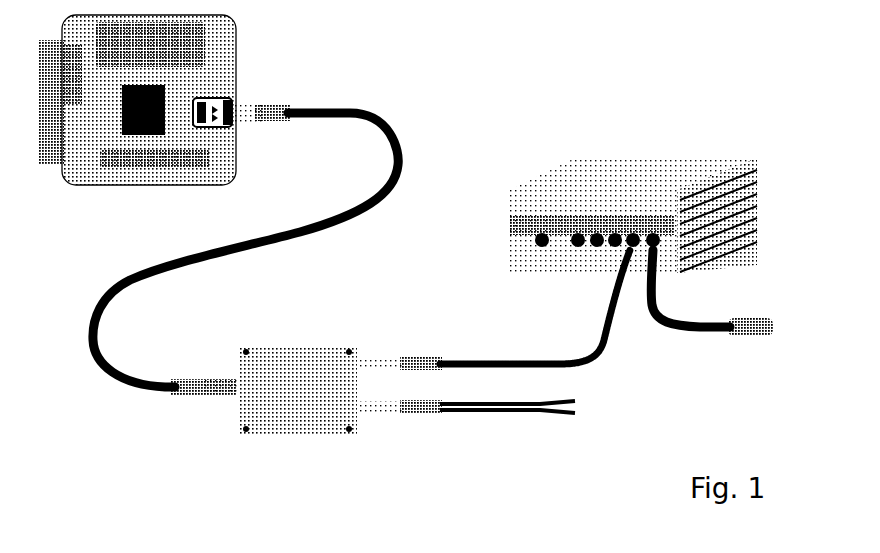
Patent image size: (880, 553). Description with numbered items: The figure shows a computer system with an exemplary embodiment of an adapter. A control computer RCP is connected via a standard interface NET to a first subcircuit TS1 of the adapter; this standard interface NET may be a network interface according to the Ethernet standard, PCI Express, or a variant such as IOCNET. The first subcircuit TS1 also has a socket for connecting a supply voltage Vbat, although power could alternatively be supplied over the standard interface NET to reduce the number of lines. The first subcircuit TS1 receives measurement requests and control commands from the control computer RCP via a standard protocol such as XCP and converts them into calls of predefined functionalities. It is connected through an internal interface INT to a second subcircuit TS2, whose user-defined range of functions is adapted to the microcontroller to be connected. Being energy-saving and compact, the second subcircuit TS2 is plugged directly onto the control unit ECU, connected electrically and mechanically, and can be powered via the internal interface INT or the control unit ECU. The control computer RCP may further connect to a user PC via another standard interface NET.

The control unit ECU is at (137, 100).
The second subcircuit TS2 is at (240, 92).
The internal interface INT is at (245, 249).
The first subcircuit TS1 is at (297, 391).
The standard interface NET is at (565, 310).
The supply voltage Vbat is at (466, 425).
The control computer RCP is at (633, 215).